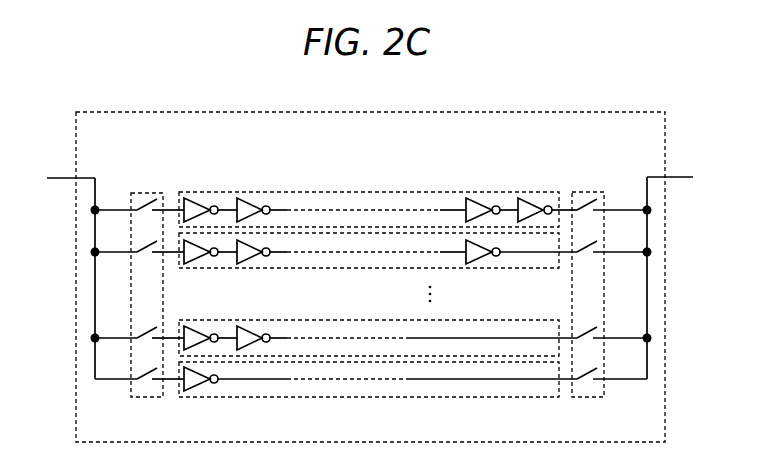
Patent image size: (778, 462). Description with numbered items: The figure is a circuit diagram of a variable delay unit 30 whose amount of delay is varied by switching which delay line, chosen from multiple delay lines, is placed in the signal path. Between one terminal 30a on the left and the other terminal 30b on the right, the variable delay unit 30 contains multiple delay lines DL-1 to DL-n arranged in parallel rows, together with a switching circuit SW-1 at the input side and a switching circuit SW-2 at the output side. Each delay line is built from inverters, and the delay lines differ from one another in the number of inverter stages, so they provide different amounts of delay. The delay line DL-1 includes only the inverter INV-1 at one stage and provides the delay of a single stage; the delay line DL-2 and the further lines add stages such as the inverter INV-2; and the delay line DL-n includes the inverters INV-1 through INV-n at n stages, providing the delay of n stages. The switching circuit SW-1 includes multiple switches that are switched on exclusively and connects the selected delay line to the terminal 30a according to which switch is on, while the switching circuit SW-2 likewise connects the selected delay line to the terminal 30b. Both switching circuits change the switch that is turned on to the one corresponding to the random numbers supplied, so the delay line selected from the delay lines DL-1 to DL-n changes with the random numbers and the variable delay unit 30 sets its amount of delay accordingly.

The variable delay unit 30 is at (618, 112).
The one terminal 30a is at (64, 170).
The other terminal 30b is at (681, 168).
The switching circuit SW-1 is at (143, 193).
The switching circuit SW-2 is at (584, 192).
The inverter INV-1 is at (192, 206).
The inverter INV-2 is at (248, 205).
The inverter INV-n is at (524, 205).
The delay line DL-1 is at (495, 397).
The delay line DL-2 is at (377, 358).
The delay line DL-n is at (341, 192).